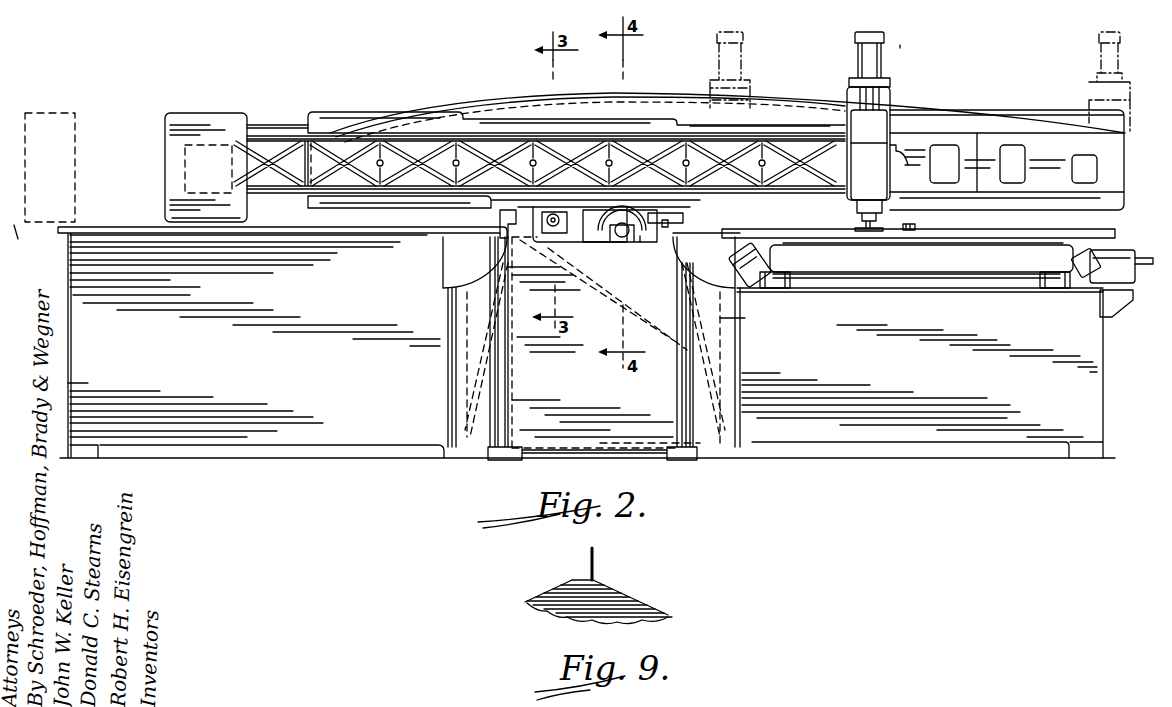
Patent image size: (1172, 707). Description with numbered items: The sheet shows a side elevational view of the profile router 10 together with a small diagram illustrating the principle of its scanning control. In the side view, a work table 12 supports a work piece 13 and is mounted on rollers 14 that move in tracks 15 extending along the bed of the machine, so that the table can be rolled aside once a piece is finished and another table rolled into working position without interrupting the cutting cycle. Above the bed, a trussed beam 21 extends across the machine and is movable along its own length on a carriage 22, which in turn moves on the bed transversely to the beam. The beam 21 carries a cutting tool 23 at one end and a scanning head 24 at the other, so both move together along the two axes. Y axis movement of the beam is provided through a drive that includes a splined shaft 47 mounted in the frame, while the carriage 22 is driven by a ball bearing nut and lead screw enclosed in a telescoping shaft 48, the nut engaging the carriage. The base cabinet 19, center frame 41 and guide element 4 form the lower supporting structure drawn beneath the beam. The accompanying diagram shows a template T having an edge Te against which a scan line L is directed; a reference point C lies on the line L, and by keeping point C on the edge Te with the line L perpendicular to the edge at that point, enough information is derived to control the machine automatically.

In FIG. 2, the profile router 10 is at (913, 84).
In FIG. 2, the work table 12 is at (1012, 230).
In FIG. 2, the work piece 13 is at (913, 230).
In FIG. 2, the rollers 14 is at (767, 285).
In FIG. 2, the tracks 15 is at (793, 283).
In FIG. 2, the base cabinet 19 is at (354, 368).
In FIG. 2, the trussed beam 21 is at (402, 152).
In FIG. 2, the carriage 22 is at (512, 205).
In FIG. 2, the cutting tool 23 is at (846, 213).
In FIG. 2, the scanning head 24 is at (162, 176).
In FIG. 2, the center frame 41 is at (612, 427).
In FIG. 2, the splined shaft 47 is at (566, 232).
In FIG. 2, the telescoping shaft 48 is at (630, 238).
In FIG. 2, the guide roller 4 is at (633, 249).
In FIG. 9, the scan line L is at (594, 557).
In FIG. 9, the reference point C is at (596, 577).
In FIG. 9, the template edge Te is at (667, 598).
In FIG. 9, the template T is at (558, 615).